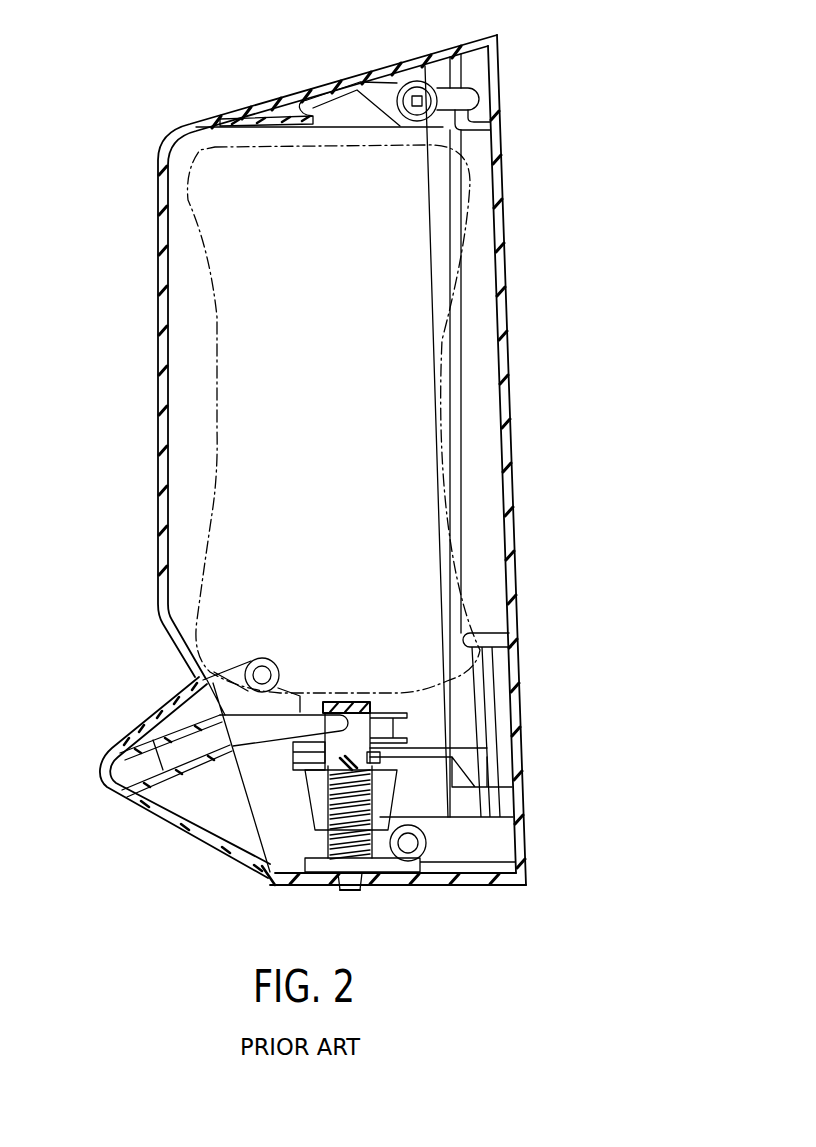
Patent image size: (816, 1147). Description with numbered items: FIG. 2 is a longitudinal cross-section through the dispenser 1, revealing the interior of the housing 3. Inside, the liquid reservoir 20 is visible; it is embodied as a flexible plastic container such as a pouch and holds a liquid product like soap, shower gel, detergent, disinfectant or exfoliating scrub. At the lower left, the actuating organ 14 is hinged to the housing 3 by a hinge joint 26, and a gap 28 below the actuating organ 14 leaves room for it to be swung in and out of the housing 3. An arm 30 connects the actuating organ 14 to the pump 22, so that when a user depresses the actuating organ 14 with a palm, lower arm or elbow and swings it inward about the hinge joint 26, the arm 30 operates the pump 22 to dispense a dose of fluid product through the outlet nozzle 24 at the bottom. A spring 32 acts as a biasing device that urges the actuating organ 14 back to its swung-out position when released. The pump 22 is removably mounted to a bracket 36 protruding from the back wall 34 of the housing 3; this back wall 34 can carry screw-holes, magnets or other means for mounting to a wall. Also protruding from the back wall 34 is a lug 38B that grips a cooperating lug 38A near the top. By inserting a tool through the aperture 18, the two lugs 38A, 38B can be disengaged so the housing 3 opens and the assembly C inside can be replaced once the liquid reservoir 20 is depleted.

The tank assembly 1 is at (117, 113).
The housing 3 is at (158, 318).
The actuating organ 14 is at (102, 777).
The aperture 18 is at (413, 96).
The liquid reservoir 20 is at (217, 413).
The pump 22 is at (390, 800).
The outlet nozzle 24 is at (352, 891).
The hinge joint 26 is at (261, 670).
The gap 28 is at (267, 878).
The arm 30 is at (200, 748).
The spring 32 is at (320, 778).
The back wall 34 is at (502, 343).
The bracket 36 is at (483, 720).
The cooperating lug 38A is at (468, 98).
The lug 38B is at (472, 125).
The assembly C is at (393, 733).